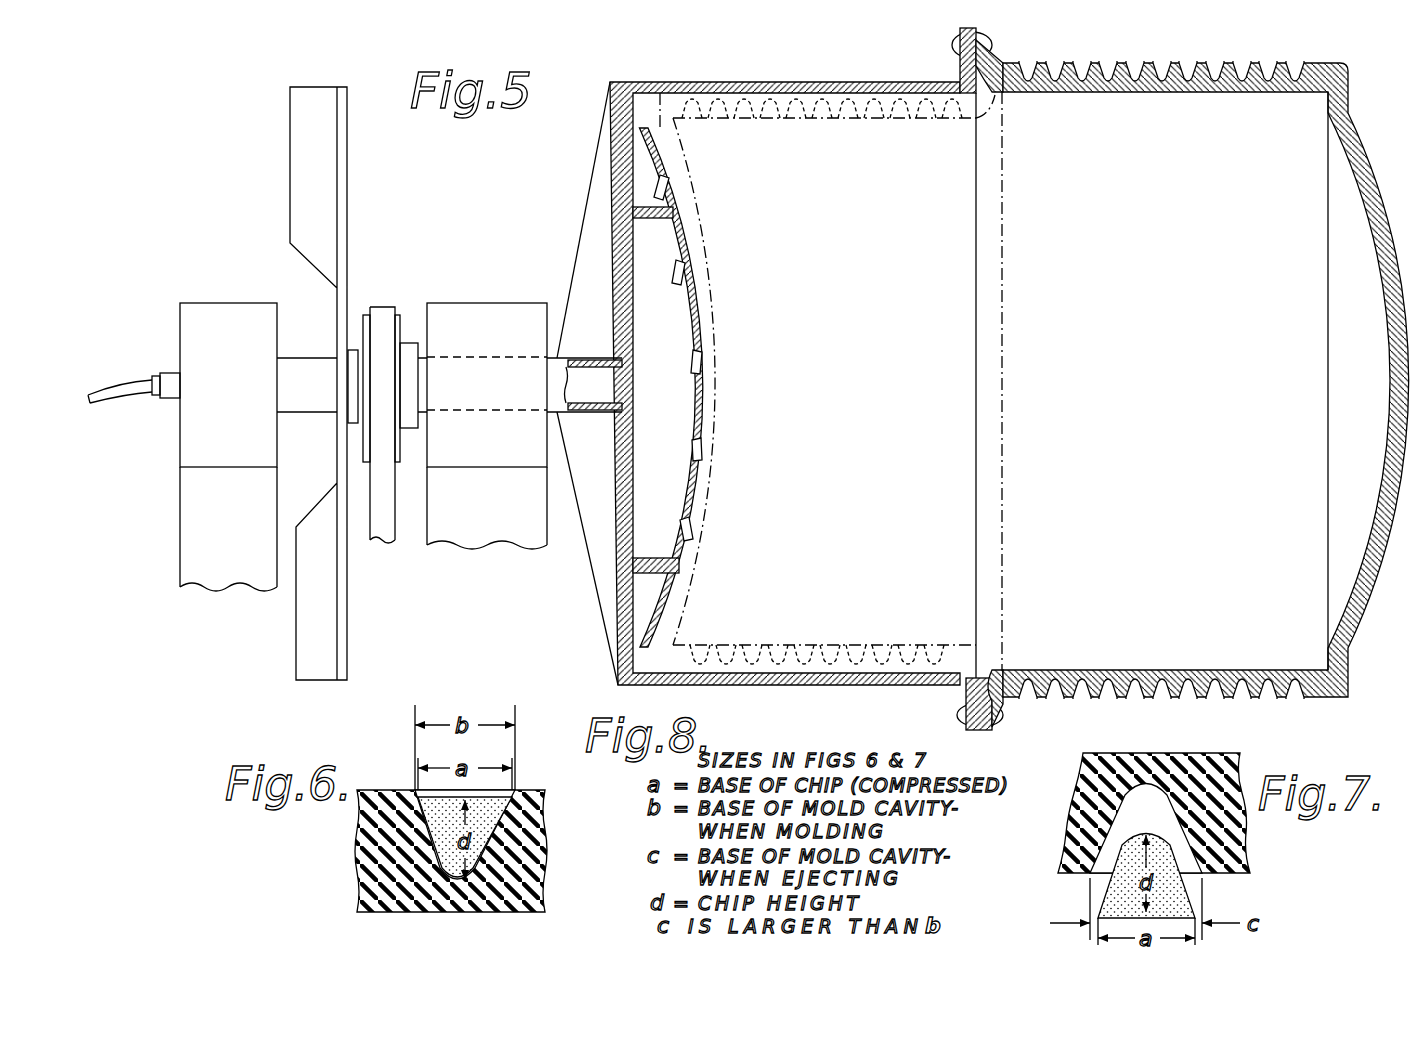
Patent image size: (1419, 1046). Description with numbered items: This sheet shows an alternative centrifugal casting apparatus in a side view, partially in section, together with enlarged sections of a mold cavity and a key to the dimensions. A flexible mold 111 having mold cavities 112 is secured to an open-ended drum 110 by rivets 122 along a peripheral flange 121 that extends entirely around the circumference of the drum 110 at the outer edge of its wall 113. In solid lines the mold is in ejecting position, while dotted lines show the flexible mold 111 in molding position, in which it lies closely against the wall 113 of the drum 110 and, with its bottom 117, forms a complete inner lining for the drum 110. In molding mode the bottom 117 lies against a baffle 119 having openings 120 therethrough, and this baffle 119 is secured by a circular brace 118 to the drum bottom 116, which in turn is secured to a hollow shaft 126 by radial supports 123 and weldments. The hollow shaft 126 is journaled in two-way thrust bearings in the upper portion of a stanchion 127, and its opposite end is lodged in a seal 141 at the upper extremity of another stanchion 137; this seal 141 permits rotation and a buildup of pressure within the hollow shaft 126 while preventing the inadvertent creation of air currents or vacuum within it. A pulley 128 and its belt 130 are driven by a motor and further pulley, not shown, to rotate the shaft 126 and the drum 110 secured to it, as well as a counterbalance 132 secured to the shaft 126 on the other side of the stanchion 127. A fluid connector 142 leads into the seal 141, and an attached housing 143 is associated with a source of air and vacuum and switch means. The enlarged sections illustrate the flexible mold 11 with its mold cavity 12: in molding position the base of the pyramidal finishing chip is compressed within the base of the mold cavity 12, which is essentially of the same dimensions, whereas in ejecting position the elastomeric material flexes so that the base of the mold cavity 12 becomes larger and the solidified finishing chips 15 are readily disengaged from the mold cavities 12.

In FIG. 5, the open-ended drum 110 is at (836, 74).
In FIG. 5, the flexible mold 111 is at (1000, 70).
In FIG. 5, the mold cavities 112 is at (1200, 70).
In FIG. 5, the wall 113 is at (700, 82).
In FIG. 5, the drum bottom 116 is at (623, 472).
In FIG. 5, the bottom 117 is at (722, 495).
In FIG. 5, the circular brace 118 is at (657, 220).
In FIG. 5, the baffle 119 is at (693, 240).
In FIG. 5, the openings 120 is at (698, 257).
In FIG. 5, the peripheral flange 121 is at (960, 60).
In FIG. 5, the rivets 122 is at (992, 40).
In FIG. 5, the radial supports 123 is at (578, 198).
In FIG. 5, the hollow shaft 126 is at (300, 358).
In FIG. 5, the stanchion 127 is at (493, 528).
In FIG. 5, the pulley 128 is at (398, 320).
In FIG. 5, the belt 130 is at (392, 550).
In FIG. 5, the counterbalance 132 is at (290, 128).
In FIG. 5, the stanchion 137 is at (188, 548).
In FIG. 5, the seal 141 is at (248, 347).
In FIG. 5, the fluid connector 142 is at (152, 372).
In FIG. 5, the housing 143 is at (115, 397).
In FIG. 6, the flexible mold 11 is at (360, 855).
In FIG. 7, the flexible mold 11 is at (1118, 762).
In FIG. 6, the mold cavity 12 is at (453, 858).
In FIG. 7, the mold cavity 12 is at (1152, 797).
In FIG. 6, the finishing chips 15 is at (490, 838).
In FIG. 7, the finishing chips 15 is at (1175, 900).